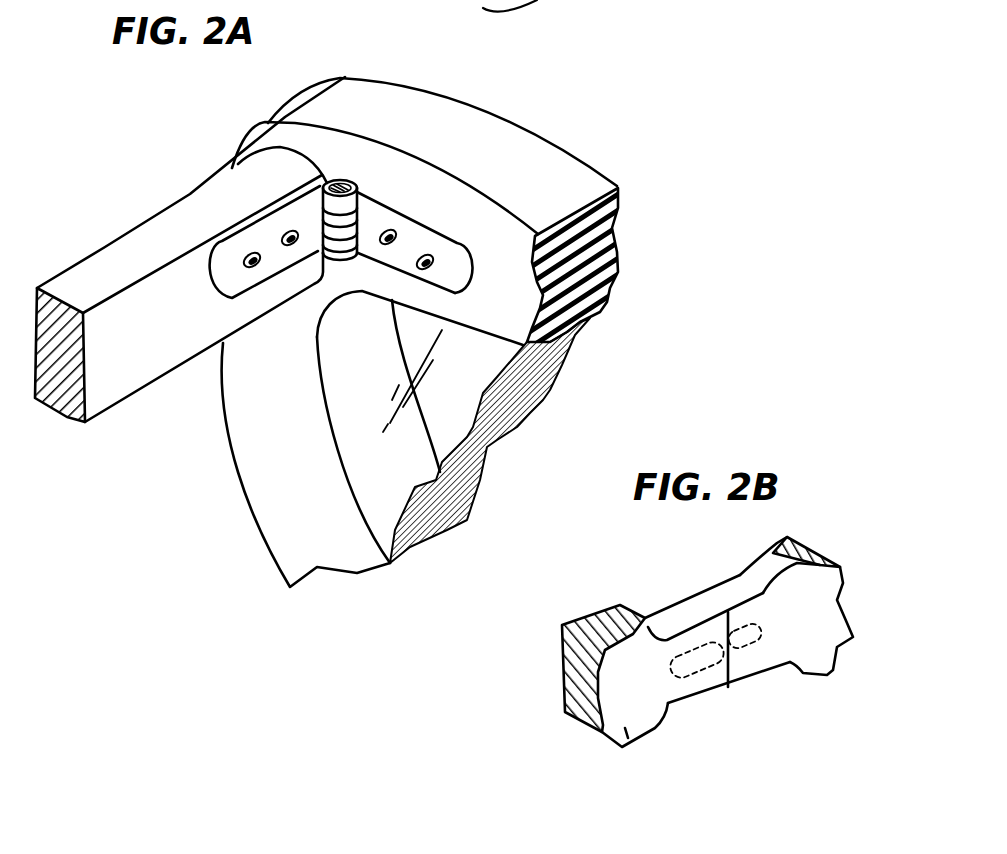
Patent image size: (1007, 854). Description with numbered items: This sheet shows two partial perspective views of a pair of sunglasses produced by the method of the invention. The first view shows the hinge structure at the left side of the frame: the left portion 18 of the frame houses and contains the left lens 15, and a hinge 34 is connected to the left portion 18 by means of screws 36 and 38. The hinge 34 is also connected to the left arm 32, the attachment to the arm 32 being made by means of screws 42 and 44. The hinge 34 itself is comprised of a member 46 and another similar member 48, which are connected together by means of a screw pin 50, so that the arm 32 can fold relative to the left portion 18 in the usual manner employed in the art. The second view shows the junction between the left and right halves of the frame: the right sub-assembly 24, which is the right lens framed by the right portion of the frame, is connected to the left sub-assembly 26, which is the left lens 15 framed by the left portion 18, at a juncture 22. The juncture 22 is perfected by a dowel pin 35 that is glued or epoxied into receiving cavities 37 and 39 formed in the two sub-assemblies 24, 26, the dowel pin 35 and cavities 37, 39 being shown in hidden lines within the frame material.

In FIG. 2A, the left lens 15 is at (406, 439).
In FIG. 2A, the left portion 18 is at (446, 219).
In FIG. 2A, the left arm 32 is at (190, 249).
In FIG. 2A, the hinge 34 is at (345, 212).
In FIG. 2A, the screw 36 is at (406, 176).
In FIG. 2A, the screw 38 is at (462, 208).
In FIG. 2A, the screw 42 is at (196, 215).
In FIG. 2A, the screw 44 is at (236, 191).
In FIG. 2A, the member 46 is at (264, 141).
In FIG. 2A, the member 48 is at (459, 229).
In FIG. 2A, the screw pin 50 is at (317, 158).
In FIG. 2B, the juncture 22 is at (717, 621).
In FIG. 2B, the right sub-assembly 24 is at (615, 702).
In FIG. 2B, the left sub-assembly 26 is at (823, 615).
In FIG. 2B, the dowel pin 35 is at (755, 660).
In FIG. 2B, the receiving cavity 37 is at (697, 679).
In FIG. 2B, the receiving cavity 39 is at (741, 603).